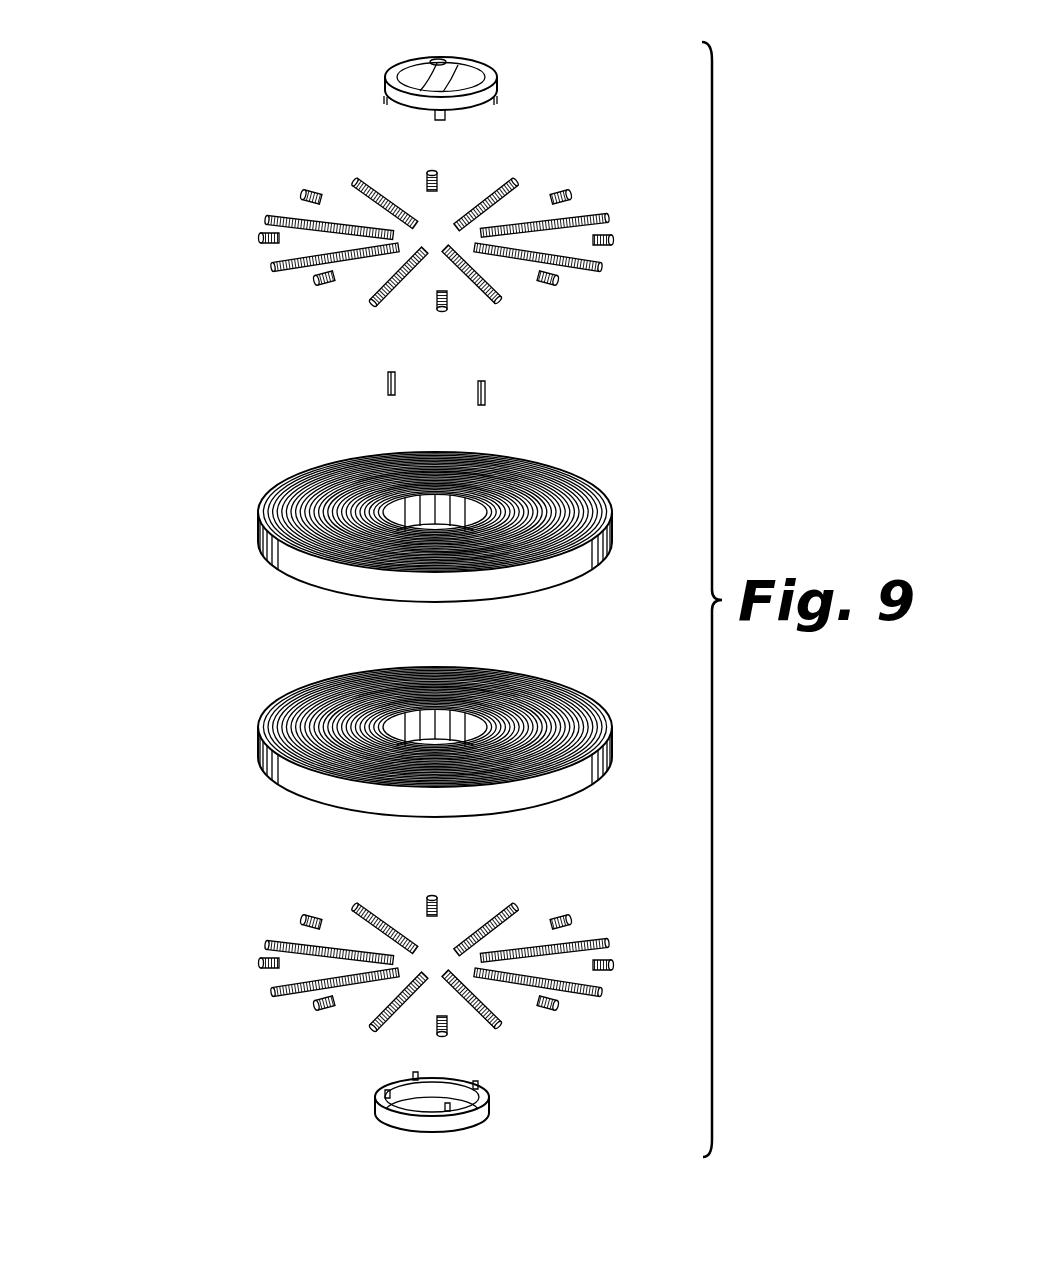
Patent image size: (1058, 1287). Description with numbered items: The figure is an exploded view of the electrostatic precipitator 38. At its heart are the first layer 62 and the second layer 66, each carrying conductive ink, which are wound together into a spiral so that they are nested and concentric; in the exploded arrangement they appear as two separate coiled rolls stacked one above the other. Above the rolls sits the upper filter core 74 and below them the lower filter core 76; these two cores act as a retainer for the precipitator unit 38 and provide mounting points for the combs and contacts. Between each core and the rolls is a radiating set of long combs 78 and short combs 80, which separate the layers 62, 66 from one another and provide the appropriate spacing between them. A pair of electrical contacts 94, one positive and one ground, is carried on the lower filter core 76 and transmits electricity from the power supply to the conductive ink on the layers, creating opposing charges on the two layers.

The precipitator 38 is at (168, 387).
The first layer 62 is at (288, 457).
The second layer 66 is at (288, 675).
The upper filter core 74 is at (388, 86).
The lower filter core 76 is at (377, 1102).
The long combs 78 is at (606, 218).
The short combs 80 is at (260, 238).
The electrical contacts 94 is at (387, 383).